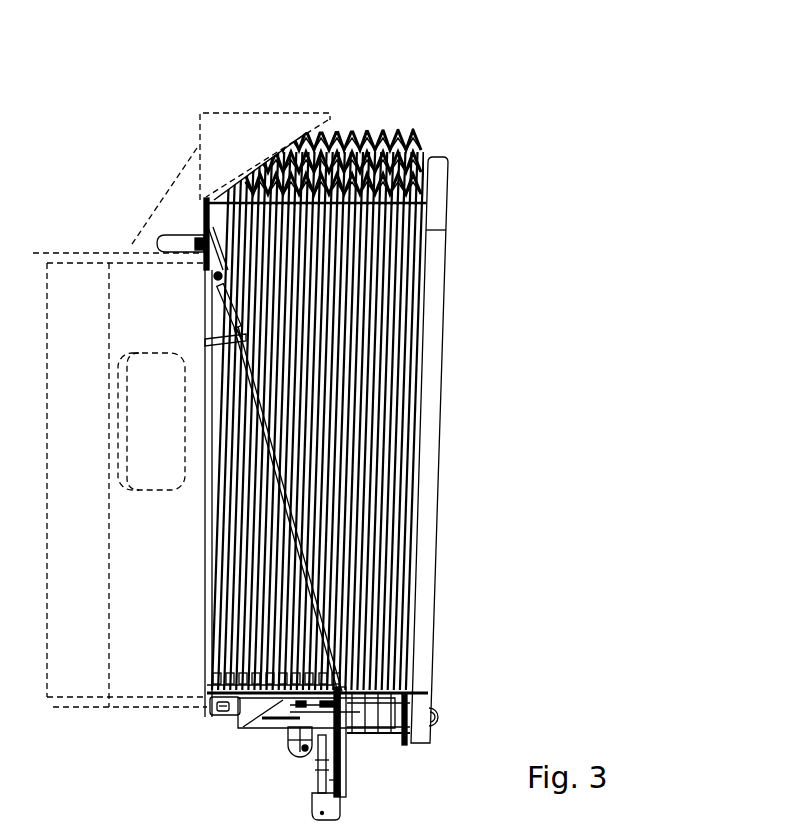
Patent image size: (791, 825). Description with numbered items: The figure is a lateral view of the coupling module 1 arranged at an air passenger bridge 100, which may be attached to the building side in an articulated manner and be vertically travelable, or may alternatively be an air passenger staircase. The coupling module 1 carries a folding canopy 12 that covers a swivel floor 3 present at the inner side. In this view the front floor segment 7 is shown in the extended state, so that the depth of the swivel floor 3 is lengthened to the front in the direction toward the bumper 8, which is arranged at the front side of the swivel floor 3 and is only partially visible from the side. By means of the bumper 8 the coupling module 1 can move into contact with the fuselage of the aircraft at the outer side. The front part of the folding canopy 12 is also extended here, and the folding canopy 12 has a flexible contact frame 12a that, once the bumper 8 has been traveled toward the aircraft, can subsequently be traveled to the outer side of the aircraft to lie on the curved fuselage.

The coupling module 1 is at (390, 90).
The folding canopy 12 is at (400, 128).
The contact frame 12a is at (443, 210).
The air passenger bridge 100 is at (106, 219).
The swivel floor 3 is at (400, 663).
The front floor segment 7 is at (370, 732).
The bumper 8 is at (430, 707).